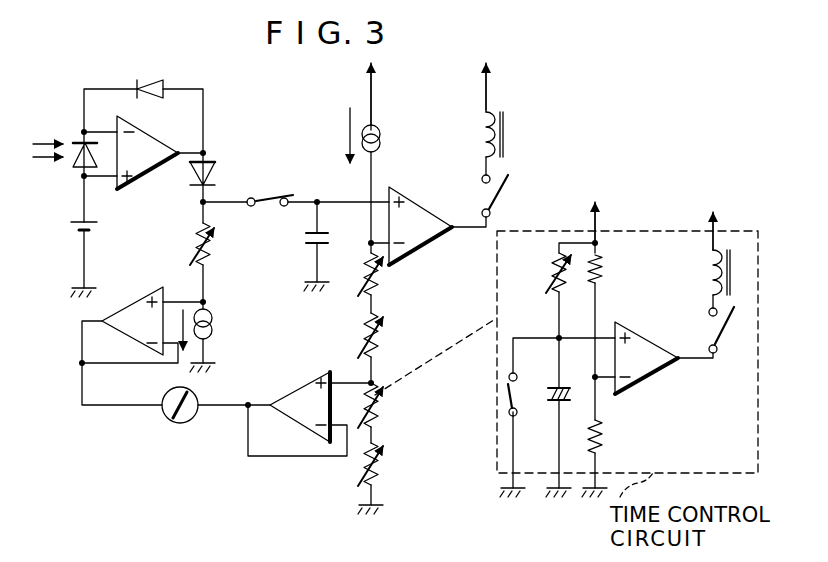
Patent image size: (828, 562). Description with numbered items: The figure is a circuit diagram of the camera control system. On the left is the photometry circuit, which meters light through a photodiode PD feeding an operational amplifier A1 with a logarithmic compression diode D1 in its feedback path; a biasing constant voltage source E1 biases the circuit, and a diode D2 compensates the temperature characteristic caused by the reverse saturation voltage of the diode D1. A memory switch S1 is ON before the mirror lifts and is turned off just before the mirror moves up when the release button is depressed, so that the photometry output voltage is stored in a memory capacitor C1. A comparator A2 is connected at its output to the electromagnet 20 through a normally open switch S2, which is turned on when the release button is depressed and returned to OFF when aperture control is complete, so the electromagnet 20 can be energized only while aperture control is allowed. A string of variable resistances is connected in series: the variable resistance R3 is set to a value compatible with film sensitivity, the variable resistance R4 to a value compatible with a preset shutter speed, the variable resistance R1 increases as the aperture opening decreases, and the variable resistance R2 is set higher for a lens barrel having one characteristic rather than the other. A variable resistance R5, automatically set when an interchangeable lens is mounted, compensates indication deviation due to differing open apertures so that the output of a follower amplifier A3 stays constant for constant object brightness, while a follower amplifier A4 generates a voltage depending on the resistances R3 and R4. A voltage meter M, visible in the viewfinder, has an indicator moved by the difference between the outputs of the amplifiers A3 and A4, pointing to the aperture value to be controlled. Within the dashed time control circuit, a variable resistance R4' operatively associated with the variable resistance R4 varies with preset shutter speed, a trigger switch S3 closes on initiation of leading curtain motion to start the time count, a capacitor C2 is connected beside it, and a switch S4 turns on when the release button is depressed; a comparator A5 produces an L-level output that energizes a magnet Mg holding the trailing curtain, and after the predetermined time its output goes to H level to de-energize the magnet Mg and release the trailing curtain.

The logarithmic compression diode D1 is at (147, 85).
The operational amplifier A1 is at (149, 176).
The photodiode PD is at (78, 171).
The biasing constant voltage source E1 is at (72, 226).
The diode D2 is at (217, 166).
The memory switch S1 is at (276, 194).
The memory capacitor C1 is at (306, 249).
The variable resistance R5 is at (195, 244).
The follower amplifier A3 is at (131, 300).
The voltage meter M is at (170, 418).
The follower amplifier A4 is at (302, 386).
The variable resistance R2 is at (379, 280).
The variable resistance R1 is at (381, 338).
The variable resistance R4 is at (391, 408).
The variable resistance R3 is at (381, 468).
The comparator A2 is at (420, 212).
The electromagnet 20 is at (504, 130).
The switch S2 is at (500, 195).
The variable resistance R4' is at (541, 273).
The trigger switch S3 is at (507, 392).
The capacitor C2 is at (548, 402).
The comparator A5 is at (648, 378).
The switch S4 is at (724, 332).
The magnet Mg is at (731, 272).